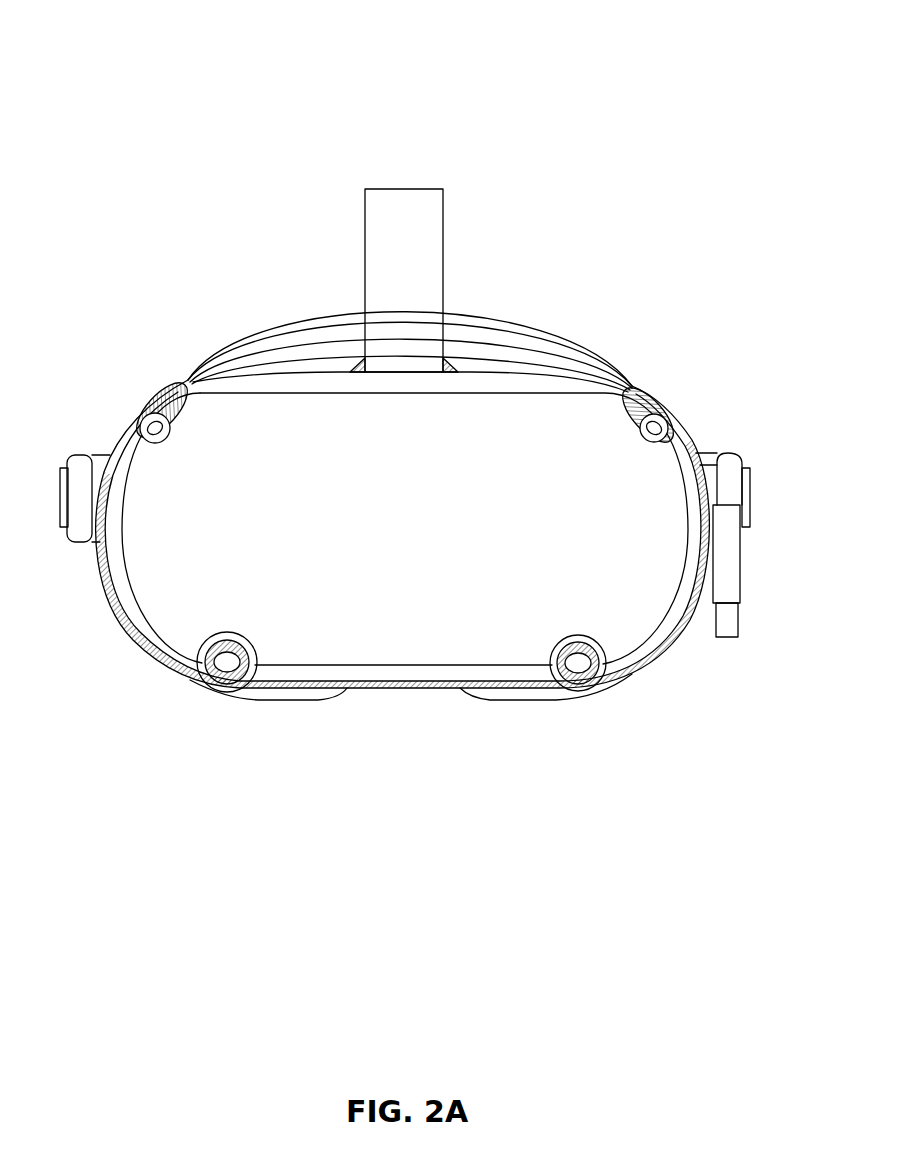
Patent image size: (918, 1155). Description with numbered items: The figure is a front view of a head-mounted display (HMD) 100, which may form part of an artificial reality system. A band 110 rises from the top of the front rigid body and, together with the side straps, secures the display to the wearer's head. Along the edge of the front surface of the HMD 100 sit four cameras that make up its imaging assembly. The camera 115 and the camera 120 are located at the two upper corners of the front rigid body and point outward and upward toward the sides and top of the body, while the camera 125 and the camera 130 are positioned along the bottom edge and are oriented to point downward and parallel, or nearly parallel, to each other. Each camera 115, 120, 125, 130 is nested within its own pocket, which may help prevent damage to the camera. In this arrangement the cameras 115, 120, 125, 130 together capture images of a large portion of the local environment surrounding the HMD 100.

The head-mounted display 100 is at (50, 38).
The band 110 is at (398, 222).
The camera 115 is at (157, 422).
The camera 120 is at (646, 418).
The camera 125 is at (586, 668).
The camera 130 is at (228, 663).